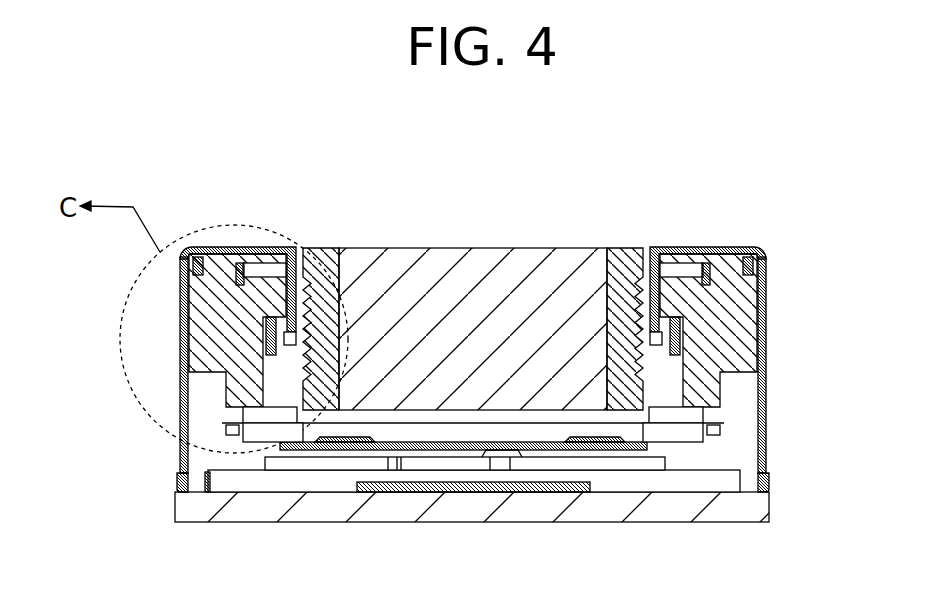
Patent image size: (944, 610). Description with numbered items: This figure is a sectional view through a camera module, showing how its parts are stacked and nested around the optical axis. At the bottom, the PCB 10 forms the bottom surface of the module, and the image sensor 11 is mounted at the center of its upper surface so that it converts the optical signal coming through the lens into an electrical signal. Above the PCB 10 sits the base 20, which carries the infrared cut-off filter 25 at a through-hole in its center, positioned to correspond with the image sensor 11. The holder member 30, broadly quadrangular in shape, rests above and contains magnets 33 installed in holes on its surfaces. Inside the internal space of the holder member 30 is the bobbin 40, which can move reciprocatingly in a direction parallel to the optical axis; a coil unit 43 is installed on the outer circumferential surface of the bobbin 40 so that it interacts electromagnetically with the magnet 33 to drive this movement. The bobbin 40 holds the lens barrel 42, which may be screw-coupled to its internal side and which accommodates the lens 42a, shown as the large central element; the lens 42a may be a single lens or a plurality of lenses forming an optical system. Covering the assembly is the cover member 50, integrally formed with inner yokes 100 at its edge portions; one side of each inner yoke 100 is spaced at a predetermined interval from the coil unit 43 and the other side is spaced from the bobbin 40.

The PCB 10 is at (760, 507).
The image sensor 11 is at (567, 493).
The base 20 is at (762, 452).
The infrared cut-off filter 25 is at (302, 447).
The holder member 30 is at (757, 317).
The magnet 33 is at (270, 293).
The bobbin 40 is at (700, 405).
The lens barrel 42 is at (328, 248).
The lens 42a is at (570, 247).
The coil unit 43 is at (683, 350).
The cover member 50 is at (763, 280).
The inner yoke 100 is at (670, 272).